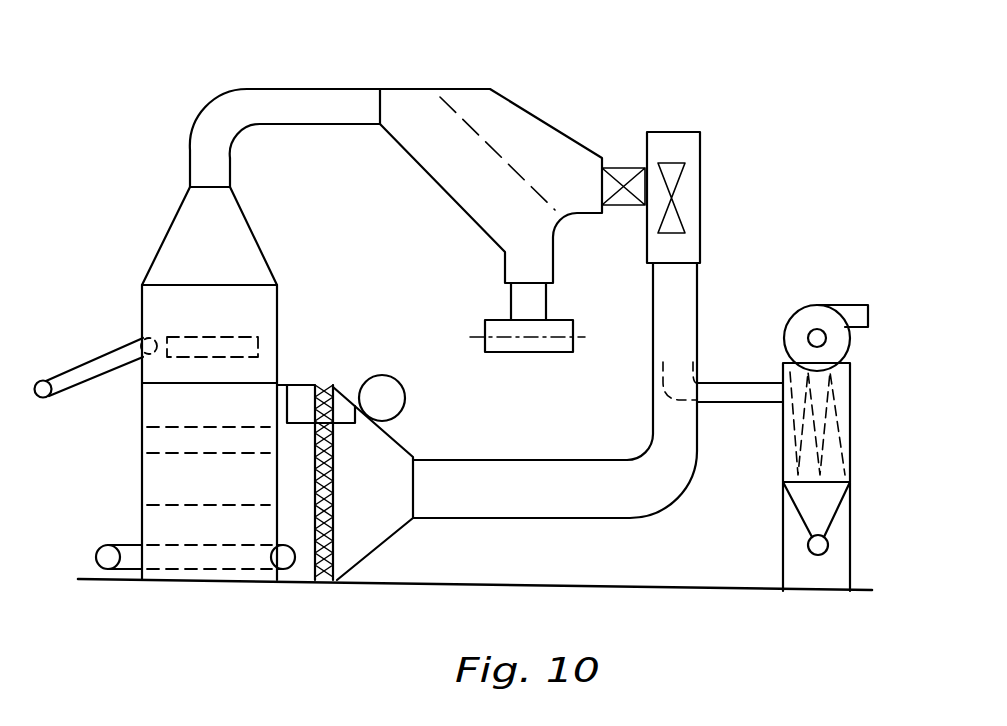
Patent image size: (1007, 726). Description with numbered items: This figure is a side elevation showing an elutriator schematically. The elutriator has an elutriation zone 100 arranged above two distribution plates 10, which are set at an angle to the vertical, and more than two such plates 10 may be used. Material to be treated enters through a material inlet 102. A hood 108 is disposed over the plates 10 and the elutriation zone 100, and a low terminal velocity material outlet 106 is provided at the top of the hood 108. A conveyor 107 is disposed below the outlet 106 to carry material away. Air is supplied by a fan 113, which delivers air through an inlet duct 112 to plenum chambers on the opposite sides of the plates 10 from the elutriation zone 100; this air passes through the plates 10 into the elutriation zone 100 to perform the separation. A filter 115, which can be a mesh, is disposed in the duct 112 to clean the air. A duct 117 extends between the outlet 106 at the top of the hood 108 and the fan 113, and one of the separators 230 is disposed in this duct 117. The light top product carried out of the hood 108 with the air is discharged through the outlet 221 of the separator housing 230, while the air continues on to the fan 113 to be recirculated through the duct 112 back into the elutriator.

The distribution plate 10 is at (158, 480).
The elutriation zone 100 is at (181, 405).
The material inlet 102 is at (143, 339).
The low terminal velocity material outlet 106 is at (190, 170).
The conveyor 107 is at (103, 562).
The hood 108 is at (254, 237).
The inlet duct 112 is at (523, 520).
The fan 113 is at (700, 205).
The filter 115 is at (334, 528).
The duct 117 is at (251, 96).
The outlet 221 is at (515, 300).
The separator 230 is at (546, 118).